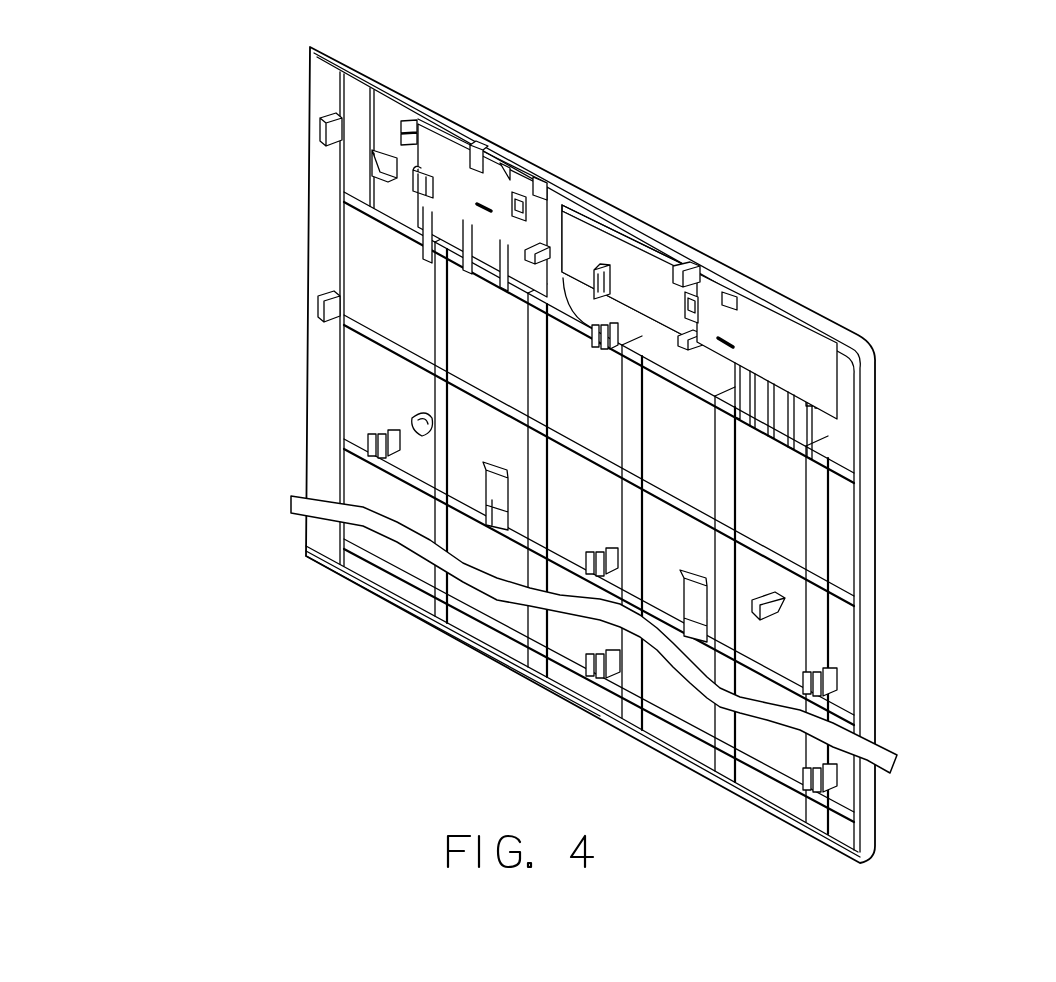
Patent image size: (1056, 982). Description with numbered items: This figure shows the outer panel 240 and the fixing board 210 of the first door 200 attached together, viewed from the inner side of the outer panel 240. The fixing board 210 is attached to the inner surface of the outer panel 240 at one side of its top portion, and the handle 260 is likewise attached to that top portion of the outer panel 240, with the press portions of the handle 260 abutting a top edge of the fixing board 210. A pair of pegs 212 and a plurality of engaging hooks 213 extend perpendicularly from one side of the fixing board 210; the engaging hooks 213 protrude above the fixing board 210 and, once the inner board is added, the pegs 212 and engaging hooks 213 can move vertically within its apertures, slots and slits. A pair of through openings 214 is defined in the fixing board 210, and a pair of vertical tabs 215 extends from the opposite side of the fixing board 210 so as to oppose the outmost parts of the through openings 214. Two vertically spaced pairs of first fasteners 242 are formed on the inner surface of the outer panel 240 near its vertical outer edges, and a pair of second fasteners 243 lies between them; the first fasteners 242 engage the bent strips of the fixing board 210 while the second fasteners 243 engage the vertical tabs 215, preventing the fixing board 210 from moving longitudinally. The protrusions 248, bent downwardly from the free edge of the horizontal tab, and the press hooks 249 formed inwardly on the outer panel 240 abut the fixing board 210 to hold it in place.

The first door 200 is at (893, 510).
The fixing board 210 is at (790, 318).
The pegs 212 is at (560, 184).
The engaging hooks 213 is at (417, 188).
The through openings 214 is at (696, 276).
The vertical tabs 215 is at (513, 193).
The outer panel 240 is at (367, 367).
The first fasteners 242 is at (413, 138).
The second fasteners 243 is at (538, 243).
The protrusions 248 is at (528, 307).
The press hooks 249 is at (472, 140).
The handle 260 is at (613, 206).